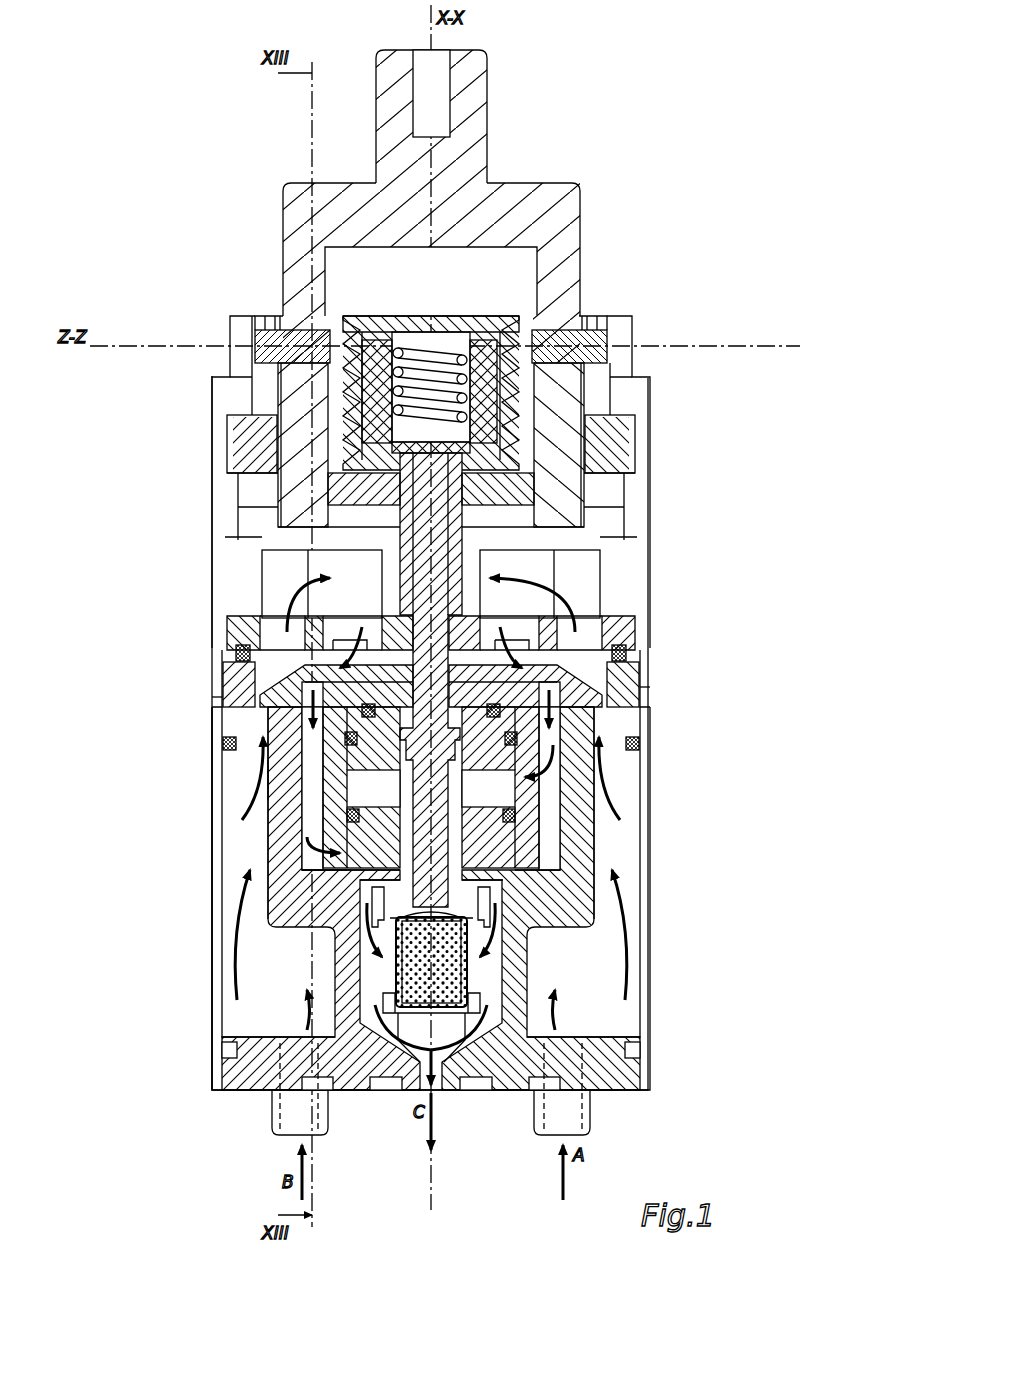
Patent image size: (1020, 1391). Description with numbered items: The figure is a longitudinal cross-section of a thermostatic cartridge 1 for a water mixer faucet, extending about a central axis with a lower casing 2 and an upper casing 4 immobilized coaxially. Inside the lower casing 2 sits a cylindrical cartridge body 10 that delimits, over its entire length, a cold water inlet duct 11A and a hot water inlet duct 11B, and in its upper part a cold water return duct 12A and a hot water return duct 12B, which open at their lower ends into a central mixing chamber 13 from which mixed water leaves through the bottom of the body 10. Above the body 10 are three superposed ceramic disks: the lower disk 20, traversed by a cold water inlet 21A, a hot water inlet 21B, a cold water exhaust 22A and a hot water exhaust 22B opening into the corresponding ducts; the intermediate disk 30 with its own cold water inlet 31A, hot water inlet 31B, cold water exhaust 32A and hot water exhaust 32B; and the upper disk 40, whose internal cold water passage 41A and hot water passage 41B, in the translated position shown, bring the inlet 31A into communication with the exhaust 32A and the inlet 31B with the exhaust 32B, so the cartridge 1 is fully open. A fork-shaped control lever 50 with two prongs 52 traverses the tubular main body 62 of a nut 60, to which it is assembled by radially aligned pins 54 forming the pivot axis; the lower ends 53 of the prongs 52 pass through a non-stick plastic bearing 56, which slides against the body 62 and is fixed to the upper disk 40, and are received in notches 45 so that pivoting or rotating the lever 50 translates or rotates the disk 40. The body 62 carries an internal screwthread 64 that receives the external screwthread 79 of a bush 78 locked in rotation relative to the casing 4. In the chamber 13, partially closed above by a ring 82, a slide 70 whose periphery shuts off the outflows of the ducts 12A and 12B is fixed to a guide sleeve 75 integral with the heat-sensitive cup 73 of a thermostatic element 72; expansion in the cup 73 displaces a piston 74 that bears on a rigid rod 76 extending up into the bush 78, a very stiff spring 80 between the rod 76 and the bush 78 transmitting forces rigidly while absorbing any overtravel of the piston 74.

The thermostatic cartridge 1 is at (157, 230).
The lower tubular outer casing 2 is at (218, 920).
The upper tubular outer casing 4 is at (218, 470).
The cartridge body 10 is at (247, 1077).
The cold water inlet duct 11A is at (588, 864).
The hot water inlet duct 11B is at (262, 864).
The cold water return duct 12A is at (605, 812).
The hot water return duct 12B is at (283, 813).
The mixing chamber 13 is at (365, 1060).
The lower disk 20 is at (223, 678).
The cold water inlet 21A is at (637, 687).
The hot water inlet 21B is at (222, 697).
The cold water exhaust 22A is at (637, 733).
The hot water exhaust 22B is at (225, 733).
The intermediate disk 30 is at (227, 627).
The cold water inlet 31A is at (637, 642).
The hot water inlet 31B is at (223, 647).
The cold water exhaust 32A is at (487, 632).
The hot water exhaust 32B is at (323, 630).
The upper disk 40 is at (237, 577).
The cold water passage 41A is at (643, 590).
The hot water passage 41B is at (250, 600).
The notches 45 is at (242, 410).
The control lever 50 is at (372, 95).
The prongs 52 is at (300, 245).
The lower ends of the prongs 53 is at (290, 528).
The pins 54 is at (273, 327).
The bearing 56 is at (253, 492).
The nut 60 is at (247, 398).
The main body of the nut 62 is at (237, 442).
The internal central screwthread 64 is at (355, 330).
The slide 70 is at (345, 885).
The thermostatic element 72 is at (585, 929).
The heat-sensitive cup 73 is at (470, 963).
The piston 74 is at (455, 845).
The guide sleeve 75 is at (458, 878).
The rigid rod 76 is at (465, 548).
The bush 78 is at (560, 298).
The external screwthread 79 is at (620, 392).
The spring 80 is at (425, 345).
The ring 82 is at (263, 780).